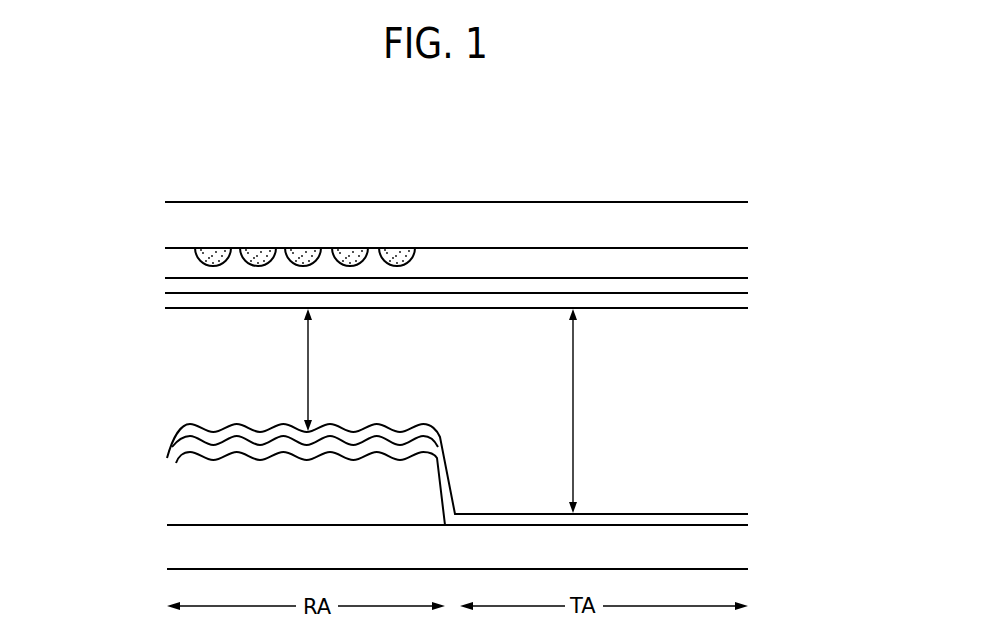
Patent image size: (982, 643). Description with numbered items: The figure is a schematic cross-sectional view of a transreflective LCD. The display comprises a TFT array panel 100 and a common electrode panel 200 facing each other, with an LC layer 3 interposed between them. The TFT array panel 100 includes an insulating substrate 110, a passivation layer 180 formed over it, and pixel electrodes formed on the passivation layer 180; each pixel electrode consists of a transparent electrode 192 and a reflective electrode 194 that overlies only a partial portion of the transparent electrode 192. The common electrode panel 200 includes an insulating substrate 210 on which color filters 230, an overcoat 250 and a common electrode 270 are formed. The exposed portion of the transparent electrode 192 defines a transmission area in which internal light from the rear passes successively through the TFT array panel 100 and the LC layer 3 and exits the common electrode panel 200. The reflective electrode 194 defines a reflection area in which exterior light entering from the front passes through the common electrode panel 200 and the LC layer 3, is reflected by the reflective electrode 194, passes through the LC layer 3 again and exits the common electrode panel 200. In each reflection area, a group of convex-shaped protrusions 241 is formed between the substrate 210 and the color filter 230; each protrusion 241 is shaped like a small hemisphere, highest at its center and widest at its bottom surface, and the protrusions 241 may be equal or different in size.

The LC layer 3 is at (155, 361).
The TFT array panel 100 is at (155, 550).
The insulating substrate 110 is at (457, 547).
The passivation layer 180 is at (328, 489).
The transparent electrode 192 is at (353, 450).
The reflective electrode 194 is at (426, 428).
The common electrode panel 200 is at (157, 221).
The insulating substrate 210 is at (742, 224).
The color filter 230 is at (742, 262).
The convex-shaped protrusion 241 is at (256, 271).
The overcoat 250 is at (742, 285).
The common electrode 270 is at (742, 300).